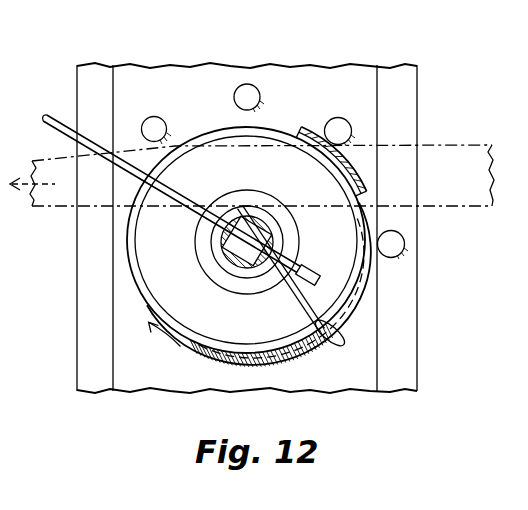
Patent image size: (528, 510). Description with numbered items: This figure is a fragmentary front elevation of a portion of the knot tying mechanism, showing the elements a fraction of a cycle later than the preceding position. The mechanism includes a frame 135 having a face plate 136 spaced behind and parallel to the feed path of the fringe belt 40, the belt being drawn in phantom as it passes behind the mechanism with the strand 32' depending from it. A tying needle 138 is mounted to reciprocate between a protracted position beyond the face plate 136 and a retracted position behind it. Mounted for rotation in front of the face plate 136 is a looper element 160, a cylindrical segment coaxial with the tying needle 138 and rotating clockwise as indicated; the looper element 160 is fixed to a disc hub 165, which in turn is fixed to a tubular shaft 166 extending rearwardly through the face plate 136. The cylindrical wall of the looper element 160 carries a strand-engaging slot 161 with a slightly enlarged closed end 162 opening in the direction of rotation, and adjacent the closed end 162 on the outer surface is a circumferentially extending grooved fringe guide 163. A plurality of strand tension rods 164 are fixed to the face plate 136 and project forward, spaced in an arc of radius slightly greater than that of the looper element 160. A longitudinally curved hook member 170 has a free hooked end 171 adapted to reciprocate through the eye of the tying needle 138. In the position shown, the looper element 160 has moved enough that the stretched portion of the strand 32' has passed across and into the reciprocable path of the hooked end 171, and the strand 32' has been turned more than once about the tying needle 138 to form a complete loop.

The frame 135 is at (409, 86).
The face plate 136 is at (159, 89).
The web or belt 40 is at (462, 130).
The looper element 160 is at (289, 121).
The strand-engaging slot 161 is at (241, 337).
The closed end of slot 162 is at (322, 314).
The grooved fringe guide 163 is at (343, 325).
The strand tension rods 164 is at (234, 97).
The disc hub 165 is at (290, 181).
The tubular shaft 166 is at (196, 258).
The hook member 170 is at (57, 108).
The hooked end 171 is at (332, 265).
The tying needle 138 is at (240, 258).
The strand 32' is at (277, 241).